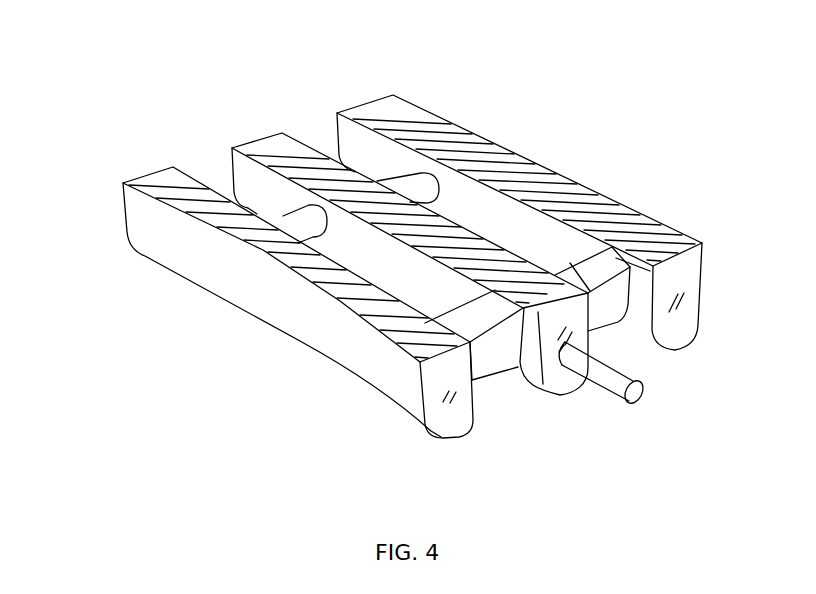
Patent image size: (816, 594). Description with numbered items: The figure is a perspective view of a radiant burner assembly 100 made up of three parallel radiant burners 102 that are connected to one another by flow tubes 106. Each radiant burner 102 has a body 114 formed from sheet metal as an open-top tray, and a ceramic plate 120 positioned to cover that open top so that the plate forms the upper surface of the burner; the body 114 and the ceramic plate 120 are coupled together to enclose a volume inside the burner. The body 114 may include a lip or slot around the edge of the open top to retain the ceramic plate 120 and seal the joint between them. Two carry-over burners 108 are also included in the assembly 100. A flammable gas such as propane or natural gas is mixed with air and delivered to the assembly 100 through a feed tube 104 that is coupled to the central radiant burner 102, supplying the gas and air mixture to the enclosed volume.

The radiant burner assembly 100 is at (237, 34).
The radiant burner 102 is at (108, 217).
The feed tube 104 is at (604, 383).
The flow tube 106 is at (298, 225).
The carry-over burner 108 is at (499, 348).
The body 114 is at (320, 325).
The ceramic plate 120 is at (403, 238).